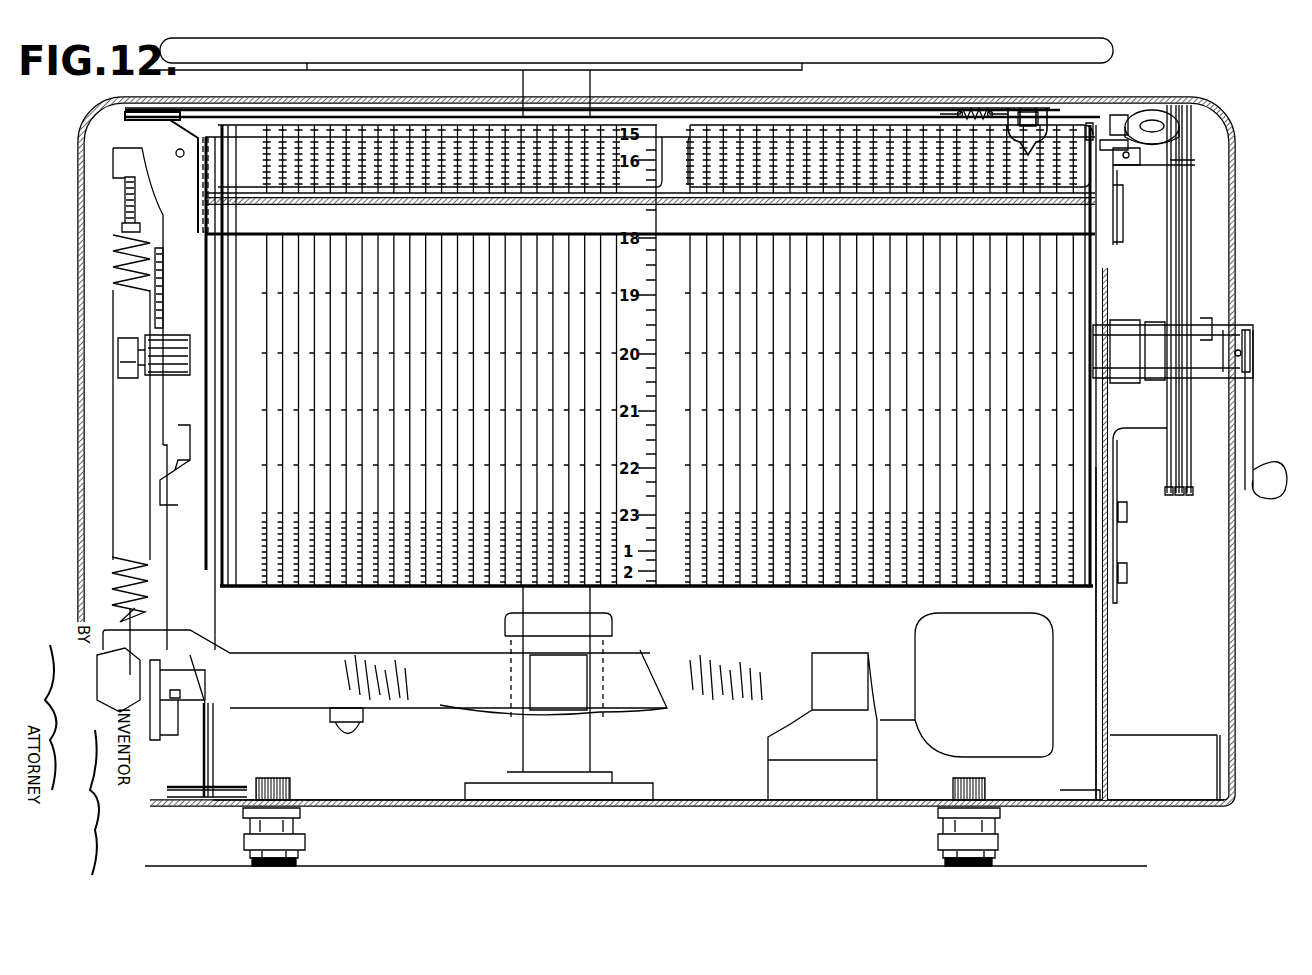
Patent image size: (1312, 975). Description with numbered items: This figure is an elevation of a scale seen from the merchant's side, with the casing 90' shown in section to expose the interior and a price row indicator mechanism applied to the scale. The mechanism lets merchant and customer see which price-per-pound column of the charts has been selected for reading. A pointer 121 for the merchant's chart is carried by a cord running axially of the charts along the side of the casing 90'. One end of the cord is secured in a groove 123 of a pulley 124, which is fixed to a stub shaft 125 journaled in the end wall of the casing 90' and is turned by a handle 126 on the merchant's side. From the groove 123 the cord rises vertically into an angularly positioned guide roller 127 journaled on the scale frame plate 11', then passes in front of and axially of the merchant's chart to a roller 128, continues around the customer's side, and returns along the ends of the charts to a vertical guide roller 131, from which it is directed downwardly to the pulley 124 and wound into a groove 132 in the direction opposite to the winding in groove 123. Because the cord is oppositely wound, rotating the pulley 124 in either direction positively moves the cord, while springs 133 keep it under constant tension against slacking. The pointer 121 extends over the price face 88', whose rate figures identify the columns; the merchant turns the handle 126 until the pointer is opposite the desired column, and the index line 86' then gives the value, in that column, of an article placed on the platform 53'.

The platform 53' is at (636, 41).
The roller 128 is at (150, 100).
The price face 88' is at (686, 160).
The springs 133 is at (970, 106).
The pointer 121 is at (1040, 150).
The scale frame plate 11' is at (1138, 424).
The guide roller 127 is at (1158, 115).
The vertical guide roller 131 is at (1190, 165).
The index line 86' is at (650, 209).
The stub shaft 125 is at (1208, 320).
The handle 126 is at (1253, 422).
The groove 123 is at (1172, 497).
The pulley 124 is at (1187, 473).
The groove 132 is at (1182, 495).
The casing 90' is at (684, 451).